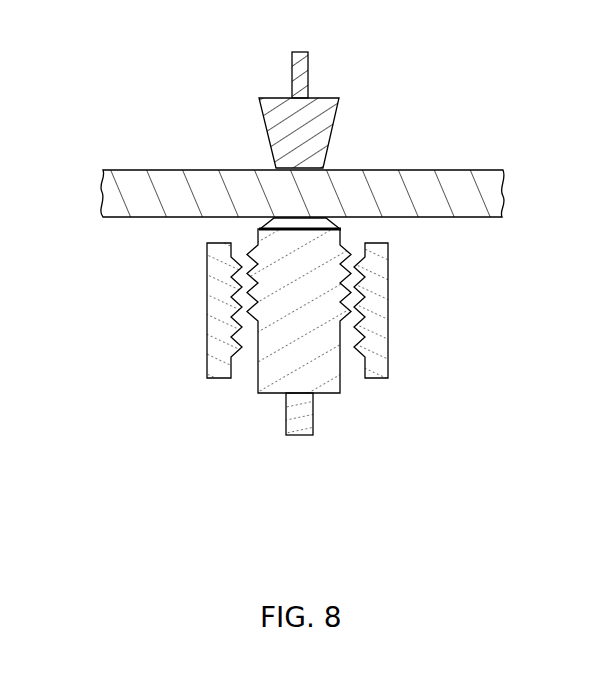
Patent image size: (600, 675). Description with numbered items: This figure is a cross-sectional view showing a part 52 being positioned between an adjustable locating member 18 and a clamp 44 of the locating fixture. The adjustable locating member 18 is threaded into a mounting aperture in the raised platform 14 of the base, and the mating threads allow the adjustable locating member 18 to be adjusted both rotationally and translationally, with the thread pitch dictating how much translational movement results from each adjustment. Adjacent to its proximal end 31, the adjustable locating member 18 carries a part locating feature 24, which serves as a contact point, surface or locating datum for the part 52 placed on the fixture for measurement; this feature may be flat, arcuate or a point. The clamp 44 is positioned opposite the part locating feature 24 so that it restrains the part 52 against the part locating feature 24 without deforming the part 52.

The raised platform 14 is at (378, 324).
The adjustable locating member 18 is at (295, 328).
The part locating feature 24 is at (326, 218).
The proximal end 31 is at (242, 229).
The clamp 44 is at (330, 75).
The part 52 is at (102, 193).